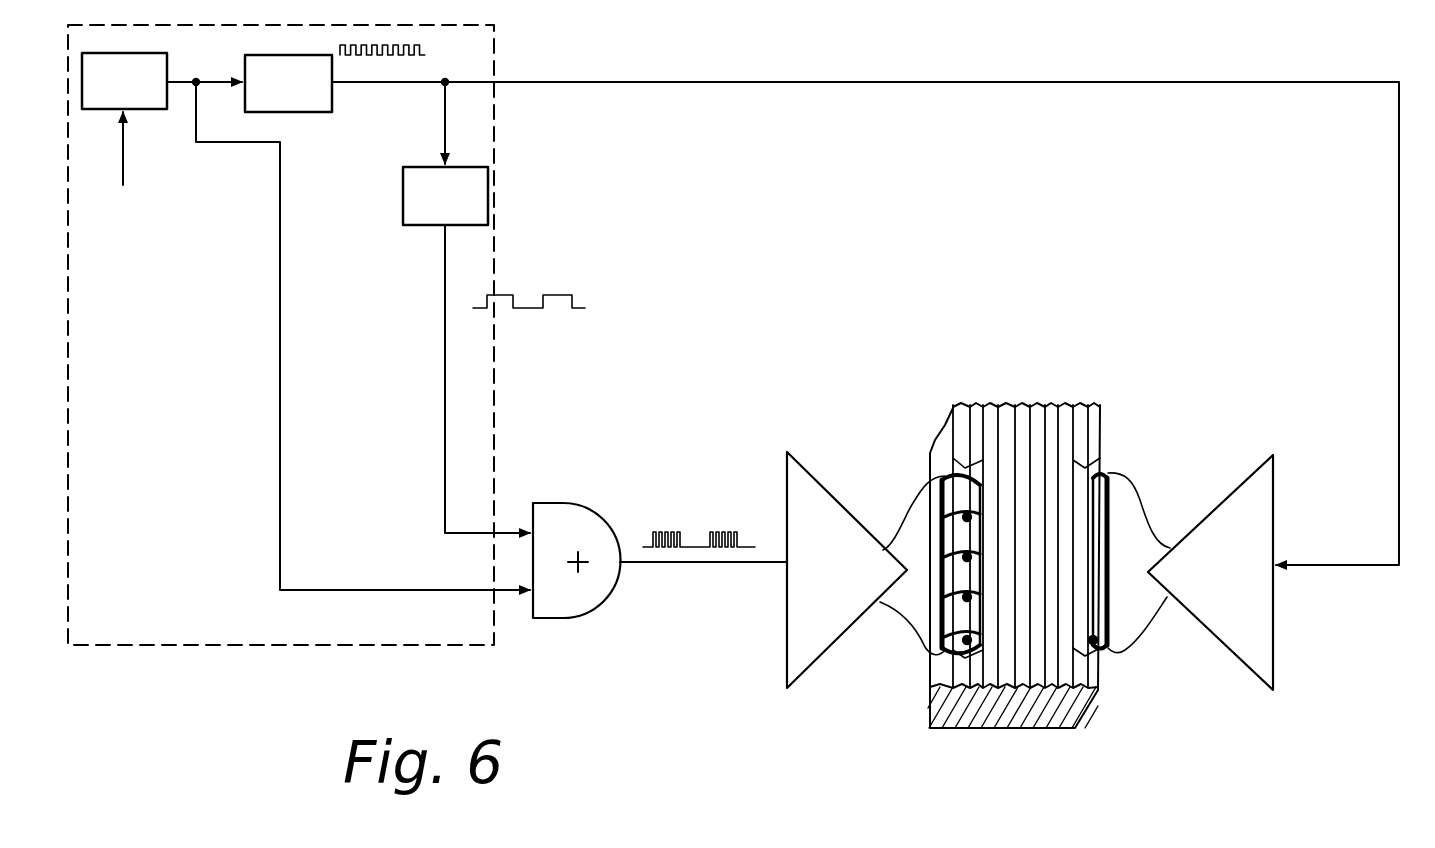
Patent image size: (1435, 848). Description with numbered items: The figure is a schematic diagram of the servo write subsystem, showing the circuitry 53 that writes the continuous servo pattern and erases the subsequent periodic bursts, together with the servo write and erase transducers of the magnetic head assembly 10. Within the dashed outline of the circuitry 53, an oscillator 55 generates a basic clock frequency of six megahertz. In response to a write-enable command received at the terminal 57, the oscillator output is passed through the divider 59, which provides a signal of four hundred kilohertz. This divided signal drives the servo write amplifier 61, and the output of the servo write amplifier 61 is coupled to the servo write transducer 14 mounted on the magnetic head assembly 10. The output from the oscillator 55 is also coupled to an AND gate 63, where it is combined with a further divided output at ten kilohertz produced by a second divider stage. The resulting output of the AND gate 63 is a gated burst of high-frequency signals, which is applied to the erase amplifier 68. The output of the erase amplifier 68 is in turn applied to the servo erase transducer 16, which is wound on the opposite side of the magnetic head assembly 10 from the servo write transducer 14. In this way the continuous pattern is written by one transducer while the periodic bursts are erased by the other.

The magnetic head assembly 10 is at (1030, 398).
The servo write transducer 14 is at (1107, 512).
The servo erase transducer 16 is at (940, 625).
The circuitry 53 is at (275, 648).
The oscillator 55 is at (168, 62).
The terminal 57 is at (125, 170).
The divider 59 is at (310, 112).
The servo write amplifier 61 is at (1273, 640).
The AND gate 63 is at (403, 206).
The erase amplifier 68 is at (786, 632).